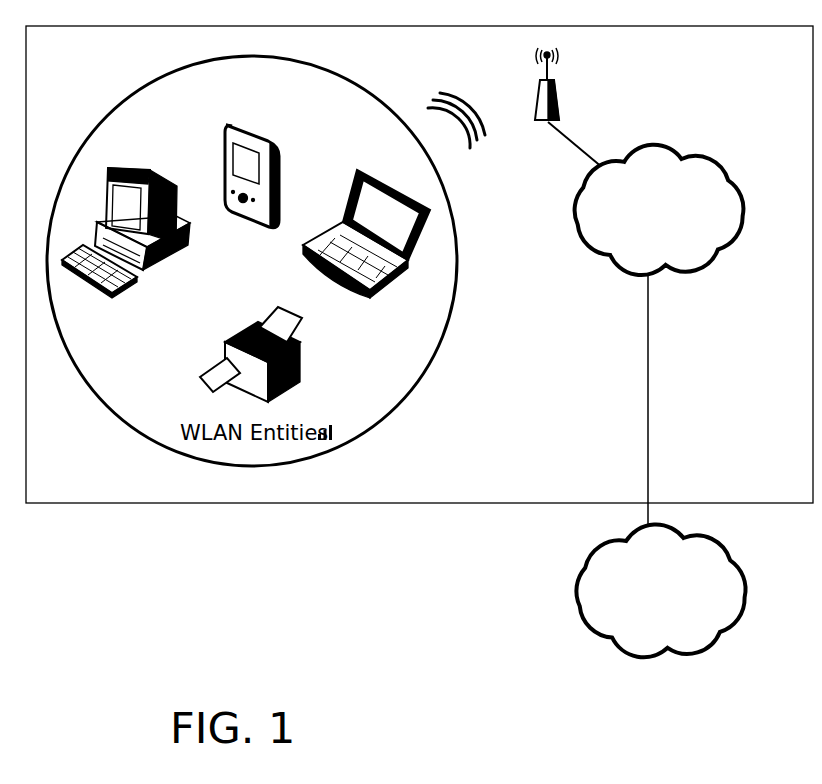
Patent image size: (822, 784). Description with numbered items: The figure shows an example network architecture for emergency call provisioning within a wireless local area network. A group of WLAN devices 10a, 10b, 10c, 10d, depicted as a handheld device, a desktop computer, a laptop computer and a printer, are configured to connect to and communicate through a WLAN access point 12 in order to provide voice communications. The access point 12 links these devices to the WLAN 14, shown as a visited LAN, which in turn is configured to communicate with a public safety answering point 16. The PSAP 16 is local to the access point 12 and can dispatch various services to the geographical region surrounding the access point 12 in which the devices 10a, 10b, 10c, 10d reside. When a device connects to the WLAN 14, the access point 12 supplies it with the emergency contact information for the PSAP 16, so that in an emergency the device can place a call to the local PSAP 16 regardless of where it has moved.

The WLAN device 10a is at (264, 132).
The WLAN device 10b is at (165, 263).
The WLAN device 10c is at (385, 288).
The WLAN device 10d is at (300, 373).
The WLAN access point 12 is at (556, 95).
The WLAN 14 is at (738, 175).
The public safety answering point 16 is at (742, 555).